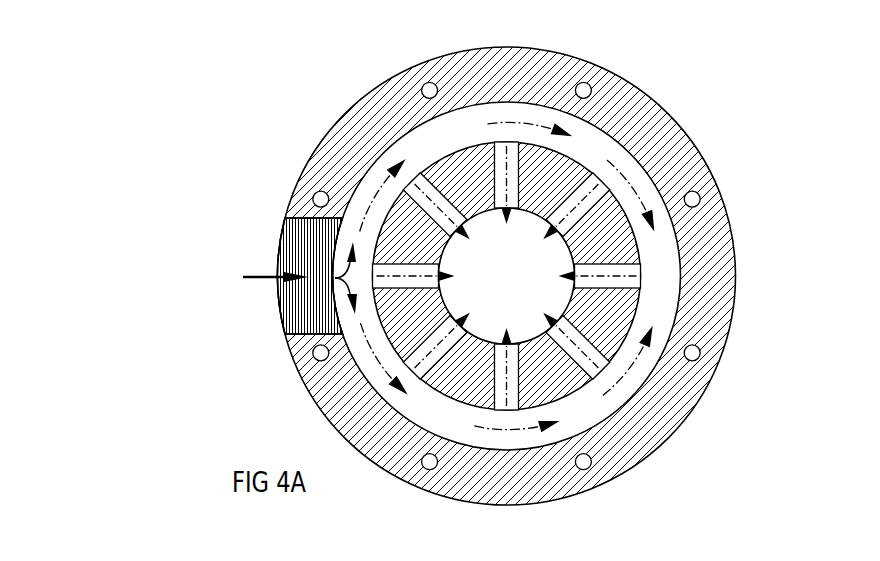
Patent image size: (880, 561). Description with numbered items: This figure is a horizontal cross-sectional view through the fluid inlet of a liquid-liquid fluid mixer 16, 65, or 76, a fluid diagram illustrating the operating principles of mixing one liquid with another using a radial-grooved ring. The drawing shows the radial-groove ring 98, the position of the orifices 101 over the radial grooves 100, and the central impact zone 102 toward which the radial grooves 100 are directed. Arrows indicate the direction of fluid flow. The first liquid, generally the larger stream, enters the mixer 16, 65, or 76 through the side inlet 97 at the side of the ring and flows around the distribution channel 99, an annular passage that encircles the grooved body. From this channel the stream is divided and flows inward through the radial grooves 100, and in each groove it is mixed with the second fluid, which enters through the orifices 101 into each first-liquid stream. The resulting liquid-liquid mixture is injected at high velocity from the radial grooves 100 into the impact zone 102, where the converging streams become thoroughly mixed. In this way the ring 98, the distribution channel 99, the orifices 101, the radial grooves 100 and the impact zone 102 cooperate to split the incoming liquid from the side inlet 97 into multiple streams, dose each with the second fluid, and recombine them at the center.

The fluid mixer 16 is at (110, 399).
The fluid mixer 65 is at (40, 464).
The fluid mixer 76 is at (40, 505).
The side inlet 97 is at (283, 287).
The radial-groove ring 98 is at (338, 118).
The distribution channel 99 is at (427, 137).
The radial grooves 100 is at (602, 182).
The orifices 101 is at (622, 277).
The impact zone 102 is at (517, 300).